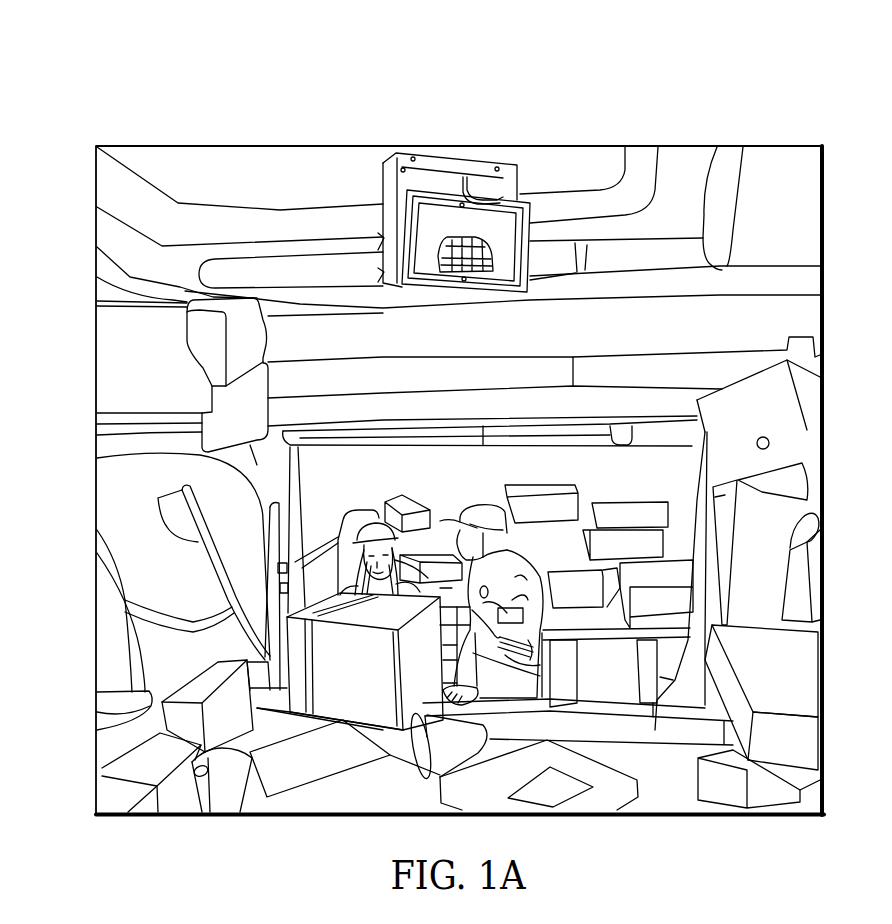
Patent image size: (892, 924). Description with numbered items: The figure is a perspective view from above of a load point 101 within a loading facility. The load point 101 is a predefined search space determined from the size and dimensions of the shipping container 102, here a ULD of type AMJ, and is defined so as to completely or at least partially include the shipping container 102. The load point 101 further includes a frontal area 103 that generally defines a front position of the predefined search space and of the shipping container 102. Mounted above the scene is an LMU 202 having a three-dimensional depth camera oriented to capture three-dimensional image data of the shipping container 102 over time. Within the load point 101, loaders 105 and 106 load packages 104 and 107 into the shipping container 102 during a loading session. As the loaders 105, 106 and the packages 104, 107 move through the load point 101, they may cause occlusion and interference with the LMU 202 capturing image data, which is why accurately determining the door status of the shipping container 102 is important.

The load point 101 is at (117, 46).
The shipping container 102 is at (670, 393).
The frontal area 103 is at (653, 724).
The package 104 is at (341, 630).
The loader 105 is at (372, 528).
The loader 106 is at (510, 562).
The package 107 is at (596, 663).
The load monitoring unit (LMU) 202 is at (465, 168).